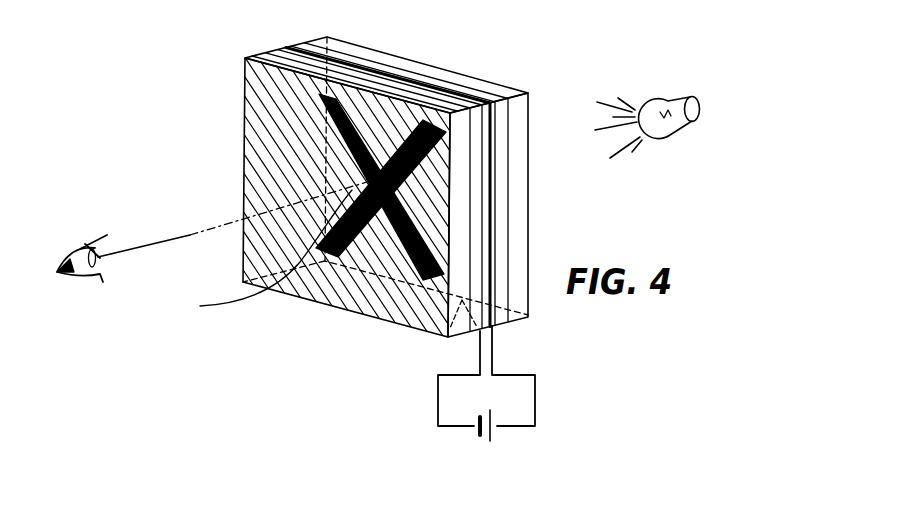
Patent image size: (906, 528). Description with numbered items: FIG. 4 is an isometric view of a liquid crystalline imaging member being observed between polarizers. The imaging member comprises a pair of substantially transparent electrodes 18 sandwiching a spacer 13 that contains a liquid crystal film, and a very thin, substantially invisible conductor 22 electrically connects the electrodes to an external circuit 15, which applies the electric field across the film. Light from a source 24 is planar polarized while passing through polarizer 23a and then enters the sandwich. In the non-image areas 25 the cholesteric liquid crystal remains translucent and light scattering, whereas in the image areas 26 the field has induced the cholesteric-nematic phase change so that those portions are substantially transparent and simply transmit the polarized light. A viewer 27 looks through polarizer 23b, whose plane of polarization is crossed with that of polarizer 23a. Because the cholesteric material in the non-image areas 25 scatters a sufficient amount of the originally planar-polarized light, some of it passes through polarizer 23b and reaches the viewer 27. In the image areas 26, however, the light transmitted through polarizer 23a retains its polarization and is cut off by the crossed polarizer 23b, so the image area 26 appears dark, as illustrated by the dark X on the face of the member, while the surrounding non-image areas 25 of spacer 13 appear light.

The spacer 13 is at (286, 48).
The external circuit 15 is at (572, 408).
The substantially transparent electrodes 18 is at (268, 51).
The conductor 22 is at (447, 342).
The polarizer 23a is at (398, 62).
The polarizer 23b is at (248, 56).
The light source 24 is at (678, 100).
The non-image areas 25 is at (291, 171).
The image areas 26 is at (260, 252).
The viewer 27 is at (66, 254).